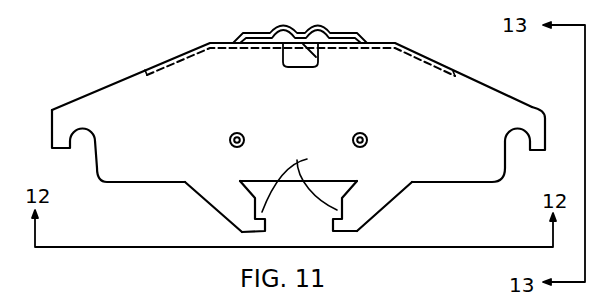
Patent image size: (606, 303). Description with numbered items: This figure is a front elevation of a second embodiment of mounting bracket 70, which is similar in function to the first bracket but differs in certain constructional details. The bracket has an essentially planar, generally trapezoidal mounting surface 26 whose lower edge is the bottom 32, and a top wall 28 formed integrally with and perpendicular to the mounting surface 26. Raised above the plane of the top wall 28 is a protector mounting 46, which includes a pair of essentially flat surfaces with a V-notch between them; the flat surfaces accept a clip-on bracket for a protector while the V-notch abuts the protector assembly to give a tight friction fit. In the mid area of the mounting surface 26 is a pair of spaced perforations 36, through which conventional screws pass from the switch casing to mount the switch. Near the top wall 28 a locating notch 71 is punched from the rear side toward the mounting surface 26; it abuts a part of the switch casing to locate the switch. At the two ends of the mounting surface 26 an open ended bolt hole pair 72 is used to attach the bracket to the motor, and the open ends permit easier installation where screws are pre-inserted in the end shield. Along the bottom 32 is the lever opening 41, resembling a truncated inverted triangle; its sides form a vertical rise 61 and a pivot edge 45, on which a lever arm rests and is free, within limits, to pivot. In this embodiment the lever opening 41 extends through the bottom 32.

The mounting surface 26 is at (127, 102).
The top wall 28 is at (380, 42).
The bottom 32 is at (357, 225).
The perforations 36 is at (353, 137).
The lever opening 41 is at (343, 190).
The pivot edge 45 is at (332, 217).
The protector mounting 46 is at (296, 26).
The vertical rise 61 is at (299, 178).
The mounting bracket 70 is at (314, 126).
The locating notch 71 is at (318, 56).
The open ended bolt hole pair 72 is at (72, 133).